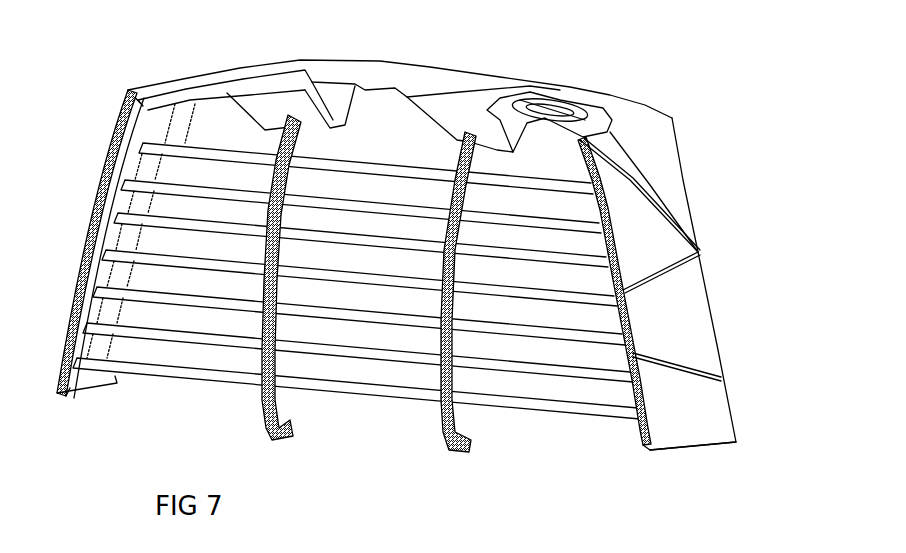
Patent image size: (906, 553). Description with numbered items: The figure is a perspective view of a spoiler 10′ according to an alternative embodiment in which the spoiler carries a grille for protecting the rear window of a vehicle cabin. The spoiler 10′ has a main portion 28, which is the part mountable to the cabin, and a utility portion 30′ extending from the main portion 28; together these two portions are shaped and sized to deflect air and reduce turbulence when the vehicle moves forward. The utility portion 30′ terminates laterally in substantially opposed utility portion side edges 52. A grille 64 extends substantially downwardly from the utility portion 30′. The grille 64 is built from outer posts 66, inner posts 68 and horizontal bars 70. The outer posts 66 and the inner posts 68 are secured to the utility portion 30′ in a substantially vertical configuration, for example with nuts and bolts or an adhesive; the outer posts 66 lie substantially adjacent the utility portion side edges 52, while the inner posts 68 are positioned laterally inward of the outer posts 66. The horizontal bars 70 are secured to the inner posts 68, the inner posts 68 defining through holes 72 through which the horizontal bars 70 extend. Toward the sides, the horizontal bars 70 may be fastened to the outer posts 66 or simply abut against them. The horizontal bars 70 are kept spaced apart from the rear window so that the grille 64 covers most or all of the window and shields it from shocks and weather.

The spoiler 10′ is at (430, 48).
The utility portion side edges 52 is at (128, 97).
The main portion 28 is at (330, 102).
The utility portion 30′ is at (592, 97).
The horizontal bars 70 is at (425, 172).
The inner posts 68 is at (270, 423).
The grille 64 is at (640, 440).
The through holes 72 is at (463, 180).
The outer posts 66 is at (80, 382).